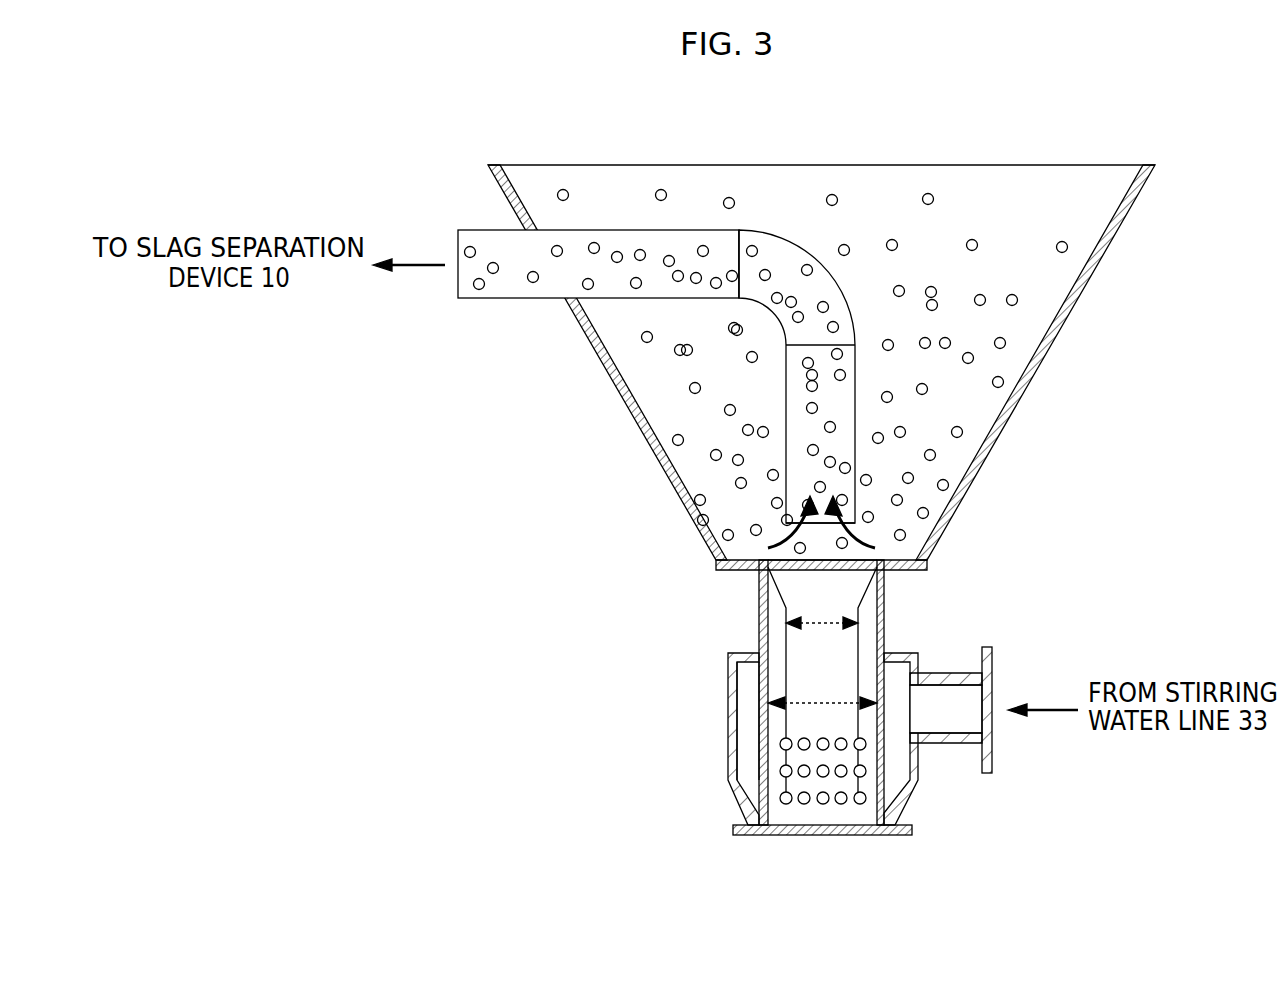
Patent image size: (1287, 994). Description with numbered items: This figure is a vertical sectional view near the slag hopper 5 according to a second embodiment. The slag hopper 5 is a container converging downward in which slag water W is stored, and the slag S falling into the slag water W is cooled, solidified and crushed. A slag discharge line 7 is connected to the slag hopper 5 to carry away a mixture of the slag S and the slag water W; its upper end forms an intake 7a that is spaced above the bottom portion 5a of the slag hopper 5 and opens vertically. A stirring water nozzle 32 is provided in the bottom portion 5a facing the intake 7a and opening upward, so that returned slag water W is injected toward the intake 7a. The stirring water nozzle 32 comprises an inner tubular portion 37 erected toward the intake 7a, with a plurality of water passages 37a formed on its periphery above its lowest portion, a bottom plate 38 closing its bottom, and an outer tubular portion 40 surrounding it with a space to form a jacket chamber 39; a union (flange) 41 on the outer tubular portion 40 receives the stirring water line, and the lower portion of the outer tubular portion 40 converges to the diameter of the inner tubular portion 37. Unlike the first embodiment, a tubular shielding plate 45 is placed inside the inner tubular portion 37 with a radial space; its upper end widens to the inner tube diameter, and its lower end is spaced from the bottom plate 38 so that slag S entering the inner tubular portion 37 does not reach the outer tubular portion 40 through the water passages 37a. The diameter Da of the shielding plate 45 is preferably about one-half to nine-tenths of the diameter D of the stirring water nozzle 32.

The slag hopper 5 is at (1082, 297).
The bottom portion of the slag hopper 5a is at (907, 557).
The slag discharge line 7 is at (483, 230).
The intake 7a is at (788, 487).
The stirring water nozzle 32 is at (733, 747).
The inner tubular portion 37 is at (760, 612).
The water passages 37a is at (804, 806).
The bottom plate 38 is at (755, 836).
The jacket chamber 39 is at (746, 770).
The outer tubular portion 40 is at (728, 725).
The union (flange) 41 is at (945, 744).
The tubular shielding plate 45 is at (786, 675).
The slag water W is at (598, 165).
The slag S is at (729, 197).
The diameter of the stirring water nozzle D is at (822, 688).
The diameter of the shielding plate Da is at (822, 606).